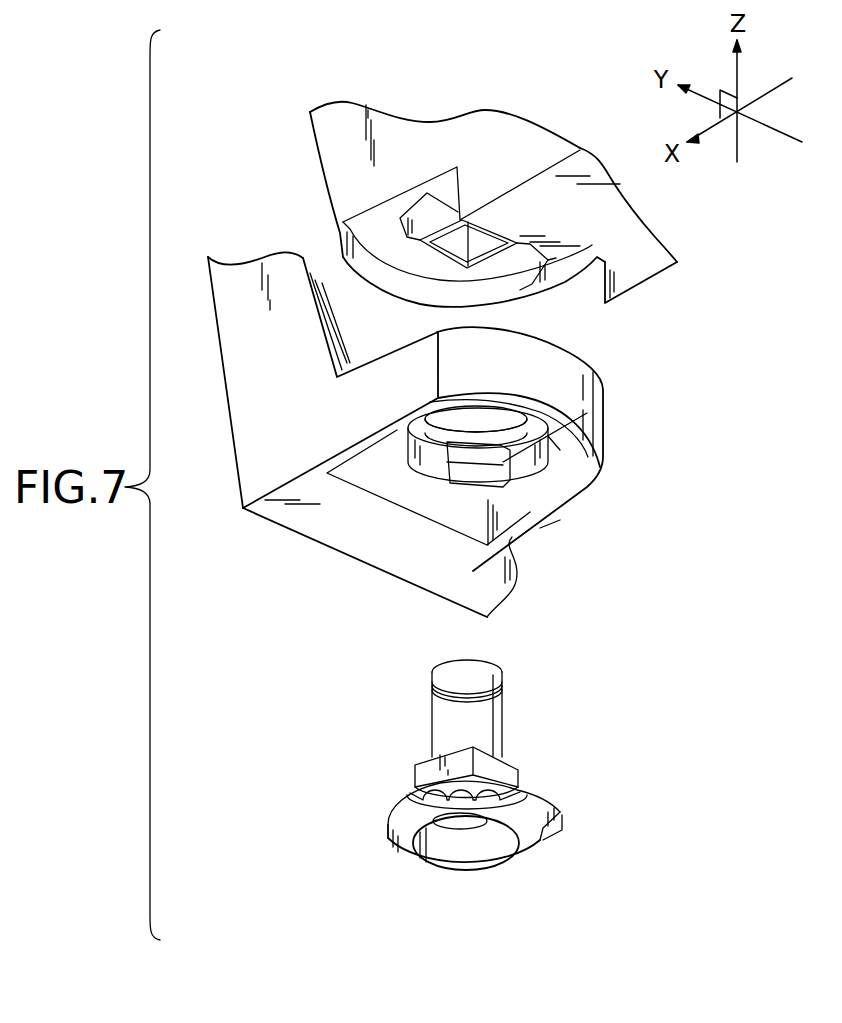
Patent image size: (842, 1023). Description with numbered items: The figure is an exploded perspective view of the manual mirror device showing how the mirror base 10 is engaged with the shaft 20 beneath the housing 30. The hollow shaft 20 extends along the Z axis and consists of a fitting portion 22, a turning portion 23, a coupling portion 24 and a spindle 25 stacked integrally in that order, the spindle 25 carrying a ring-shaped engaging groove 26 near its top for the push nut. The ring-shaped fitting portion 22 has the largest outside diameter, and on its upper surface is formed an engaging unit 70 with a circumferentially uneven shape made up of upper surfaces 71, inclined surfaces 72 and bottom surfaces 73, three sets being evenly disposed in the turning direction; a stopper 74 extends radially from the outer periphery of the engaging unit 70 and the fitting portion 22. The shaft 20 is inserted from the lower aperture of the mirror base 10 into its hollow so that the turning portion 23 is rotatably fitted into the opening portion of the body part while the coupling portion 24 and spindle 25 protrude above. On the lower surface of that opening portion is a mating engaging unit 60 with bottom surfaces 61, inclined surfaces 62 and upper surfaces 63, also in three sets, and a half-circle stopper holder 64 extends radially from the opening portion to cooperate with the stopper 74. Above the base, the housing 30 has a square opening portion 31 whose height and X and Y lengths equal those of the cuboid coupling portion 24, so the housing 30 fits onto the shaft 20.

The mirror base 10 is at (595, 358).
The shaft 20 is at (484, 725).
The fitting portion 22 is at (480, 788).
The turning portion 23 is at (507, 785).
The coupling portion 24 is at (417, 773).
The spindle 25 is at (437, 720).
The engaging groove 26 is at (500, 690).
The housing 30 is at (310, 170).
The opening portion 31 is at (497, 243).
The engaging unit 60 is at (553, 428).
The bottom surfaces 61 is at (533, 437).
The inclined surfaces 62 is at (447, 467).
The upper surfaces 63 is at (482, 447).
The stopper holder 64 is at (403, 463).
The engaging unit 70 is at (475, 889).
The upper surfaces 71 is at (398, 803).
The inclined surfaces 72 is at (440, 827).
The bottom surfaces 73 is at (473, 827).
The stopper 74 is at (567, 873).